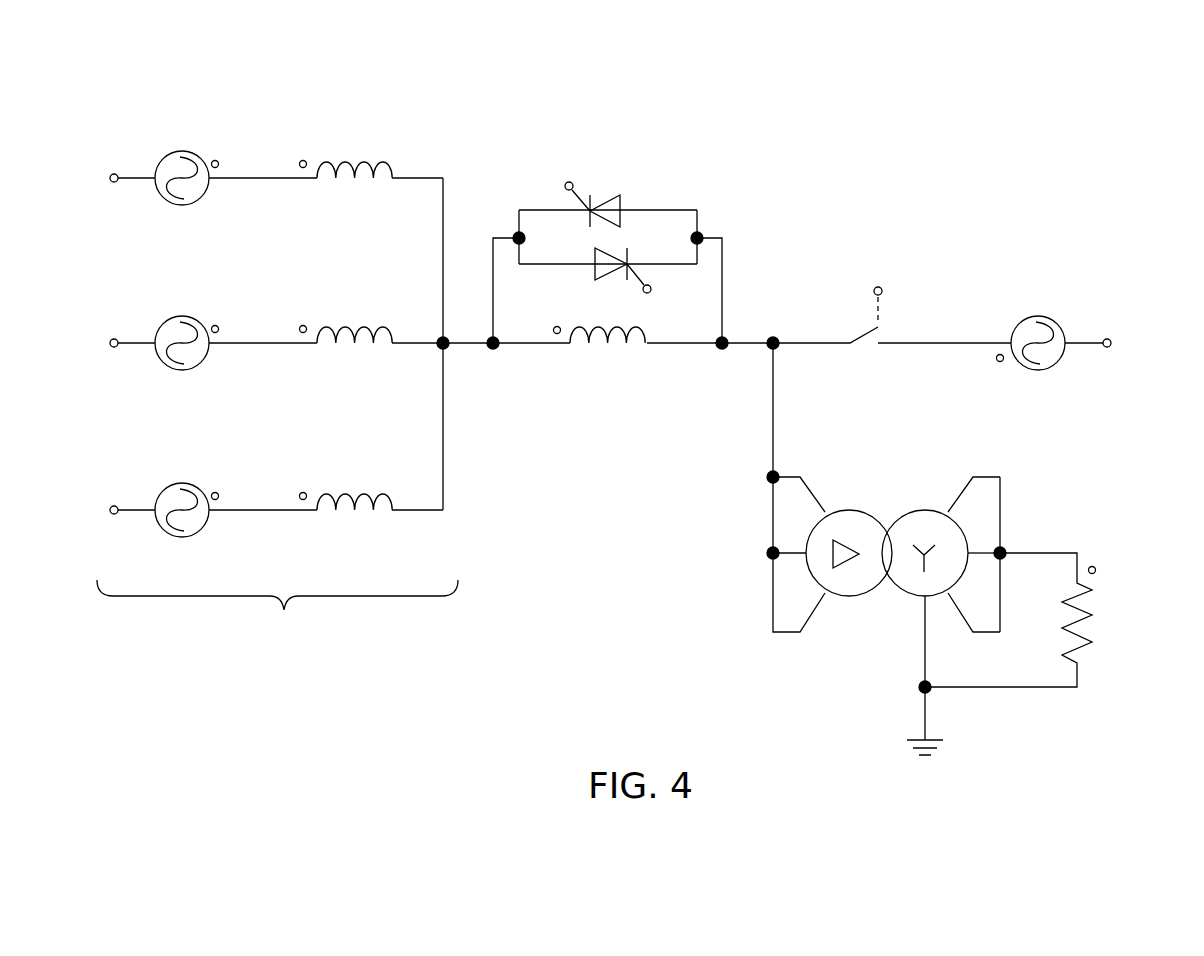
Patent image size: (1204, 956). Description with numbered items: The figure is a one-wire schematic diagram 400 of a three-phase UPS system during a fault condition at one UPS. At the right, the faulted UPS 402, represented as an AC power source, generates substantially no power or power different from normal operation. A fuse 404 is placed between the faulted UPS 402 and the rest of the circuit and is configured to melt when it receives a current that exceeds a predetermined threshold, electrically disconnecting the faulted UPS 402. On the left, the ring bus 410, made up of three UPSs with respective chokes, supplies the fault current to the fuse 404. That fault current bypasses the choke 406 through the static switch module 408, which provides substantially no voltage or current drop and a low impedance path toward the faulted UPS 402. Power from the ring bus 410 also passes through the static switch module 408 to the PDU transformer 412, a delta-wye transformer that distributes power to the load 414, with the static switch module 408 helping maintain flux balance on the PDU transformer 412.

The schematic diagram 400 is at (966, 120).
The faulted UPS 402 is at (1038, 316).
The fuse 404 is at (862, 311).
The choke 406 is at (602, 345).
The static switch module 408 is at (669, 188).
The ring bus 410 is at (284, 610).
The PDU transformer 412 is at (811, 636).
The load 414 is at (1085, 610).